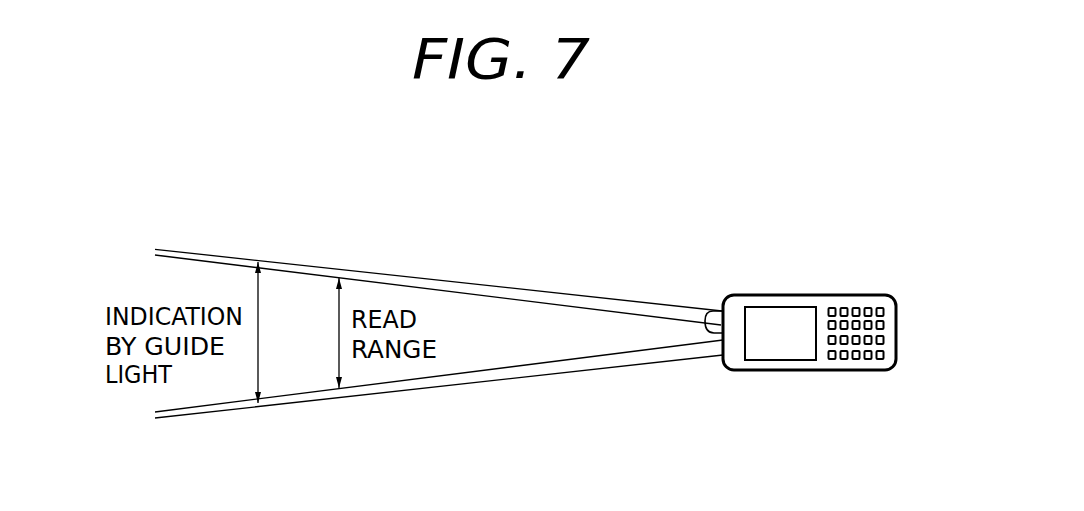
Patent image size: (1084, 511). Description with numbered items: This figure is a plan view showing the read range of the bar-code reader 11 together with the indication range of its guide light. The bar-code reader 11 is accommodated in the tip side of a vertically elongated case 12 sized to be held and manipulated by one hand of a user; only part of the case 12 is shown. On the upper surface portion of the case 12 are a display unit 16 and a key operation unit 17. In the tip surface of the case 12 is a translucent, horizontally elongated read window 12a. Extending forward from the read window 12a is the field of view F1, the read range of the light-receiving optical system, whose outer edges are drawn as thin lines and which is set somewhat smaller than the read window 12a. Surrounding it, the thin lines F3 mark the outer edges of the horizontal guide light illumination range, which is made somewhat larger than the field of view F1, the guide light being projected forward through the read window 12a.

The bar-code reader 11 is at (819, 294).
The case 12 is at (825, 372).
The read window 12a is at (709, 308).
The display unit 16 is at (776, 340).
The key operation unit 17 is at (896, 330).
The field of view F1 is at (412, 287).
The guide light illumination range outer edges F3 is at (473, 283).